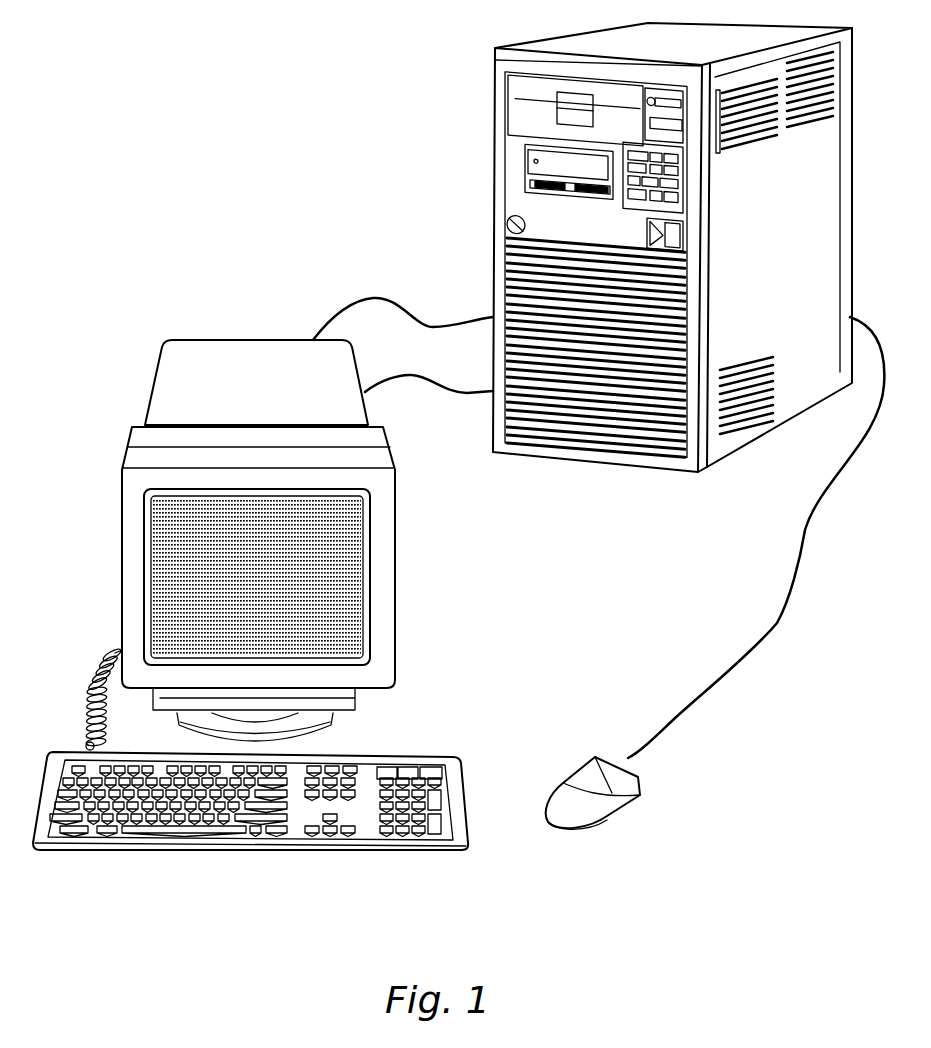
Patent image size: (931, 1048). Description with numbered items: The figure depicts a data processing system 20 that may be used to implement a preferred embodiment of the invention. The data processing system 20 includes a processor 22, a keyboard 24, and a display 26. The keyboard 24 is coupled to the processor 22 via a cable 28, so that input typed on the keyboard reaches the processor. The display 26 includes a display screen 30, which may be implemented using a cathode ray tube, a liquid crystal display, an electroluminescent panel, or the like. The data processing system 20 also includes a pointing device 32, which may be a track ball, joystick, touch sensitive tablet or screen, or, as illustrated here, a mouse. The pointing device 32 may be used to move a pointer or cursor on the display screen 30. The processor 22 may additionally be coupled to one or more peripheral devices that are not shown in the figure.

The data processing system 20 is at (267, 178).
The processor 22 is at (493, 263).
The keyboard 24 is at (285, 847).
The display 26 is at (273, 360).
The cable 28 is at (87, 677).
The display screen 30 is at (337, 555).
The pointing device 32 is at (597, 818).